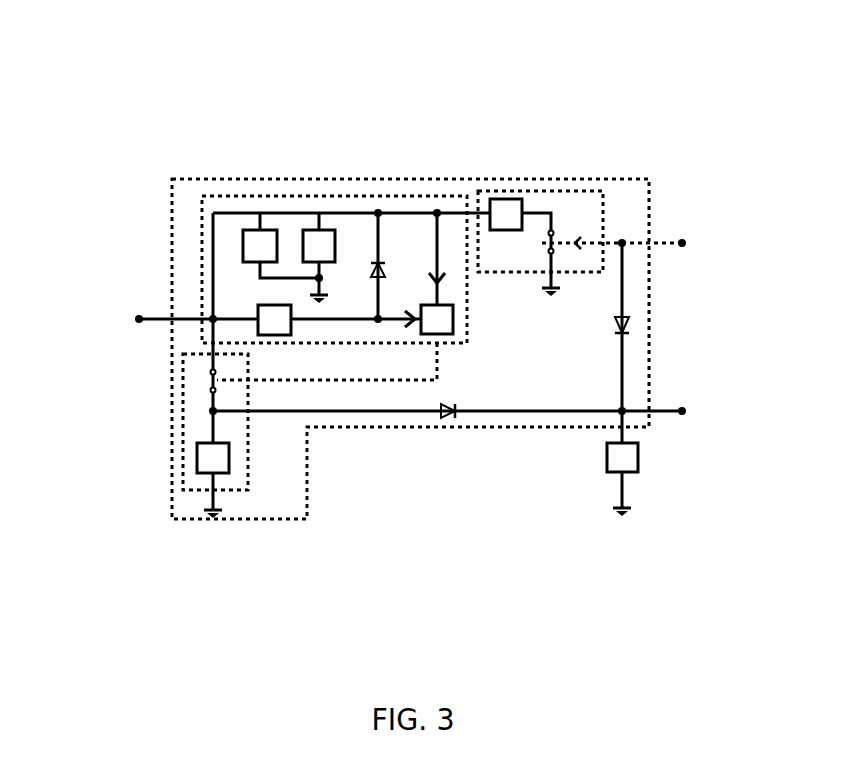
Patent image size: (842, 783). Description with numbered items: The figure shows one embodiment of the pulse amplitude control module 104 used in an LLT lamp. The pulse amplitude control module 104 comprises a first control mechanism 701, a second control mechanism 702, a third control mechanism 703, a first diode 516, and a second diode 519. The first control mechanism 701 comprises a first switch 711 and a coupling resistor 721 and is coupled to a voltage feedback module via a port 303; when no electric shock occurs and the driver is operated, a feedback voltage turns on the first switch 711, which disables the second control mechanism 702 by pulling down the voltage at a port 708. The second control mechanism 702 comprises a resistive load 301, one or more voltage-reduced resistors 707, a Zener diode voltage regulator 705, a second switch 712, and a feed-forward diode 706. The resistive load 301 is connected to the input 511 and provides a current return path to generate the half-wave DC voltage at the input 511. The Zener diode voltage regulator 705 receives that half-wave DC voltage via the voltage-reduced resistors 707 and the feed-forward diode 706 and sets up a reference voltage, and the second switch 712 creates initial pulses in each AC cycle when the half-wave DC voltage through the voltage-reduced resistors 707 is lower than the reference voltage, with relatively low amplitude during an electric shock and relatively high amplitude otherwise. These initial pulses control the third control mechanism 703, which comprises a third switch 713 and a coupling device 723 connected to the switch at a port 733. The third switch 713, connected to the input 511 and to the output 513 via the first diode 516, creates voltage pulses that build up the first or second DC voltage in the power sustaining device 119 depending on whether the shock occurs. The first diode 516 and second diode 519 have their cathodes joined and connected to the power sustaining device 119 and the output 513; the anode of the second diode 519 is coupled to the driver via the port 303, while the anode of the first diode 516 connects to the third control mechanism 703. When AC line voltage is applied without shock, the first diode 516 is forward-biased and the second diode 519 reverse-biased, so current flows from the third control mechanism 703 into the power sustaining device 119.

The pulse amplitude control module 104 is at (331, 179).
The resistive load 301 is at (258, 230).
The Zener diode voltage regulator 705 is at (312, 230).
The voltage-reduced resistors 707 is at (258, 305).
The second control mechanism 702 is at (389, 196).
The first control mechanism 701 is at (544, 190).
The third control mechanism 703 is at (250, 463).
The coupling device 723 is at (198, 473).
The feed-forward diode 706 is at (376, 278).
The port 708 is at (438, 213).
The first switch 711 is at (556, 240).
The second switch 712 is at (453, 334).
The coupling resistor 721 is at (503, 199).
The third switch 713 is at (207, 378).
The port 733 is at (210, 412).
The power sustaining device 119 is at (607, 465).
The port 303 is at (682, 243).
The input 511 is at (139, 319).
The output 513 is at (682, 411).
The first diode 516 is at (452, 417).
The second diode 519 is at (627, 327).